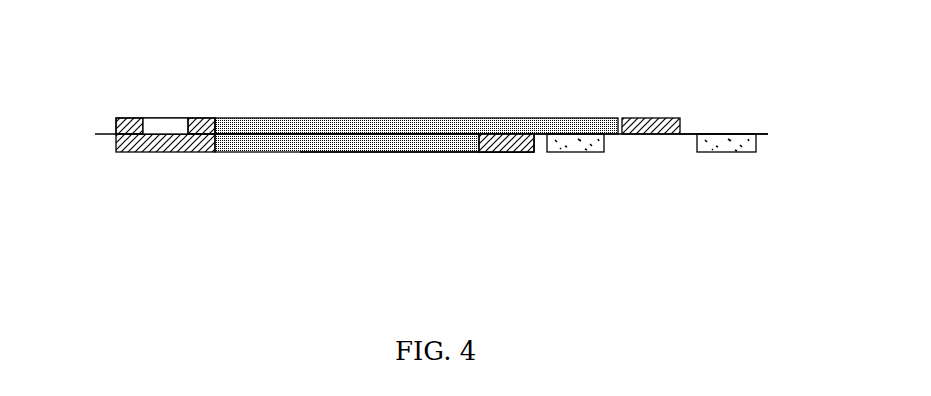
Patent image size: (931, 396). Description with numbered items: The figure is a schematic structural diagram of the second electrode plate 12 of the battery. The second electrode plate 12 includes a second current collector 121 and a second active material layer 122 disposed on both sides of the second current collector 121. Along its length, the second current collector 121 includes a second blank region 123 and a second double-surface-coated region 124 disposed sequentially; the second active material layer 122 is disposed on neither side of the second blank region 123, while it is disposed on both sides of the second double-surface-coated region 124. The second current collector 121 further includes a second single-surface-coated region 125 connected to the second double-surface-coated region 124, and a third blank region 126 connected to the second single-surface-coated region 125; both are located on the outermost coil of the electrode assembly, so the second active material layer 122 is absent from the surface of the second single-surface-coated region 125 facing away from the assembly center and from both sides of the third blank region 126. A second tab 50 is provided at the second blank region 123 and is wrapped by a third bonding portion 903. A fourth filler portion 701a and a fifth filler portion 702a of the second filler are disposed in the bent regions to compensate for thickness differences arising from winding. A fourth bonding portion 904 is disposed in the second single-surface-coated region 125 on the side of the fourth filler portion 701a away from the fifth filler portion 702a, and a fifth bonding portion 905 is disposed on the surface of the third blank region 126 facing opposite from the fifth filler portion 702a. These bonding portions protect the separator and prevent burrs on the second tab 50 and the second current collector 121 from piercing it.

The second electrode plate 12 is at (431, 81).
The second current collector 121 is at (327, 133).
The second active material layer 122 is at (253, 126).
The second blank region 123 is at (167, 167).
The second double-surface-coated region 124 is at (363, 170).
The second single-surface-coated region 125 is at (478, 173).
The third blank region 126 is at (733, 117).
The second tab 50 is at (165, 125).
The third bonding portion 903 is at (131, 128).
The fourth bonding portion 904 is at (508, 152).
The fifth bonding portion 905 is at (648, 117).
The fourth filler portion 701a is at (572, 152).
The fifth filler portion 702a is at (710, 153).